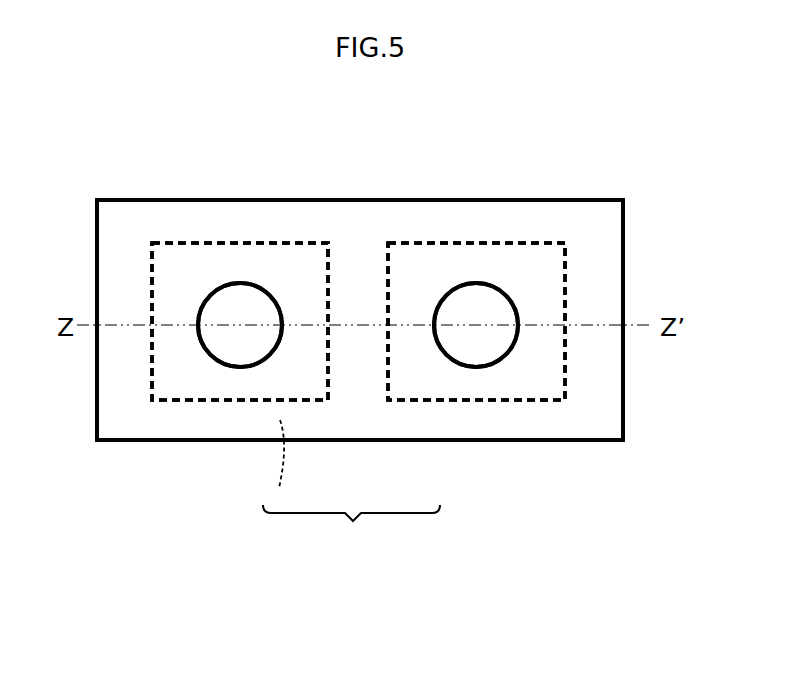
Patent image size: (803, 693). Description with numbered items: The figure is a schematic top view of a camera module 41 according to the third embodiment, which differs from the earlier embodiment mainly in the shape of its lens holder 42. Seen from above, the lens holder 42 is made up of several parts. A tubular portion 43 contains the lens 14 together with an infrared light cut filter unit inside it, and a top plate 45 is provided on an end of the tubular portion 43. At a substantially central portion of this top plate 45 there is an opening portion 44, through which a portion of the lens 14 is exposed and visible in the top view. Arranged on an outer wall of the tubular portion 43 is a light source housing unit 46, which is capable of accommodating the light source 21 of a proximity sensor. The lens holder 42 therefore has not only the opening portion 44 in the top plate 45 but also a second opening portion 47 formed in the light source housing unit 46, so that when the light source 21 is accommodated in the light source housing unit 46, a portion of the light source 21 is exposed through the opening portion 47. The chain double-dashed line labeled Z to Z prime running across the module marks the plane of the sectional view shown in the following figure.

The lens 14 is at (242, 310).
The light source 21 is at (473, 308).
The camera module 41 is at (582, 189).
The lens holder 42 is at (358, 401).
The tubular portion 43 is at (280, 469).
The opening portion 44 is at (245, 367).
The top plate 45 is at (313, 415).
The light source housing unit 46 is at (430, 404).
The opening portion 47 is at (478, 367).